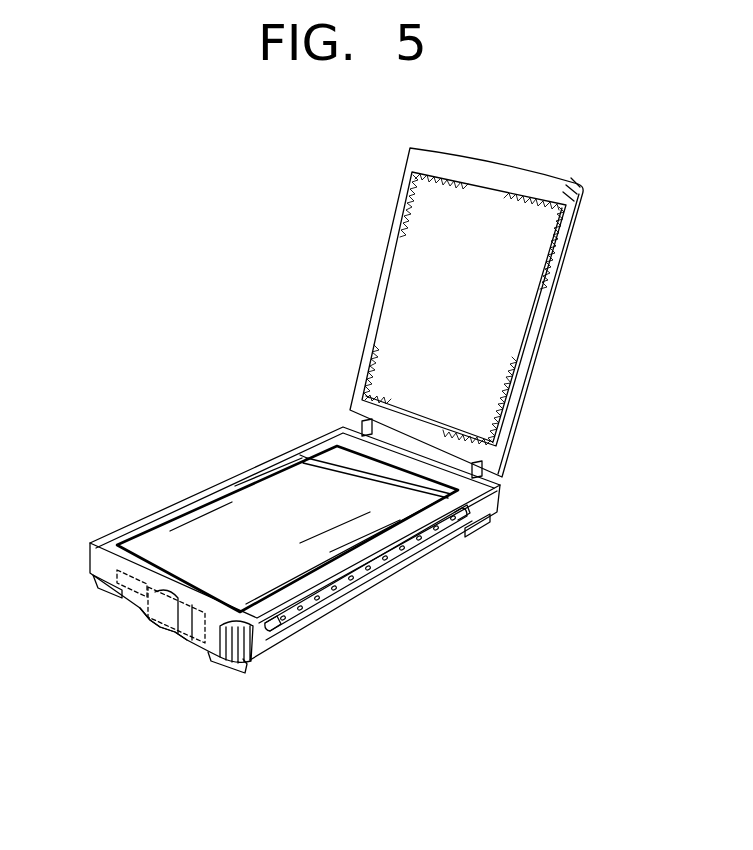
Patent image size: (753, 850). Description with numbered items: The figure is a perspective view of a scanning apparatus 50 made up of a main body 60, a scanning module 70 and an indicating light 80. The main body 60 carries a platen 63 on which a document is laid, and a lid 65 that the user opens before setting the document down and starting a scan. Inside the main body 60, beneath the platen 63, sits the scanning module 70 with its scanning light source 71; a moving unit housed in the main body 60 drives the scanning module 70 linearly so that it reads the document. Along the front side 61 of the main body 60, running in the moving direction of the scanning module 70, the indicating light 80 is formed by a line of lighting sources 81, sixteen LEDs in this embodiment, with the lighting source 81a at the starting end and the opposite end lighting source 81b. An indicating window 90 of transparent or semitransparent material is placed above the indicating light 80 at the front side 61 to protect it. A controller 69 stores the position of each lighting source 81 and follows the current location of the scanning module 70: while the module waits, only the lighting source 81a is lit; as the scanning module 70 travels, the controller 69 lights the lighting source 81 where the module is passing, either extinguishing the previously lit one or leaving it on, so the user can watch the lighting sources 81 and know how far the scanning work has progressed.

The scanning apparatus 50 is at (179, 292).
The main body 60 is at (115, 527).
The front side 61 is at (250, 642).
The platen 63 is at (240, 512).
The lid 65 is at (562, 243).
The controller 69 is at (180, 640).
The scanning module 70 is at (320, 446).
The scanning light source 71 is at (345, 465).
The indicating light 80 is at (428, 544).
The lighting sources 81 is at (379, 573).
The lighting source at a starting end 81a is at (474, 512).
The second end 81b is at (275, 628).
The indicating window 90 is at (343, 586).